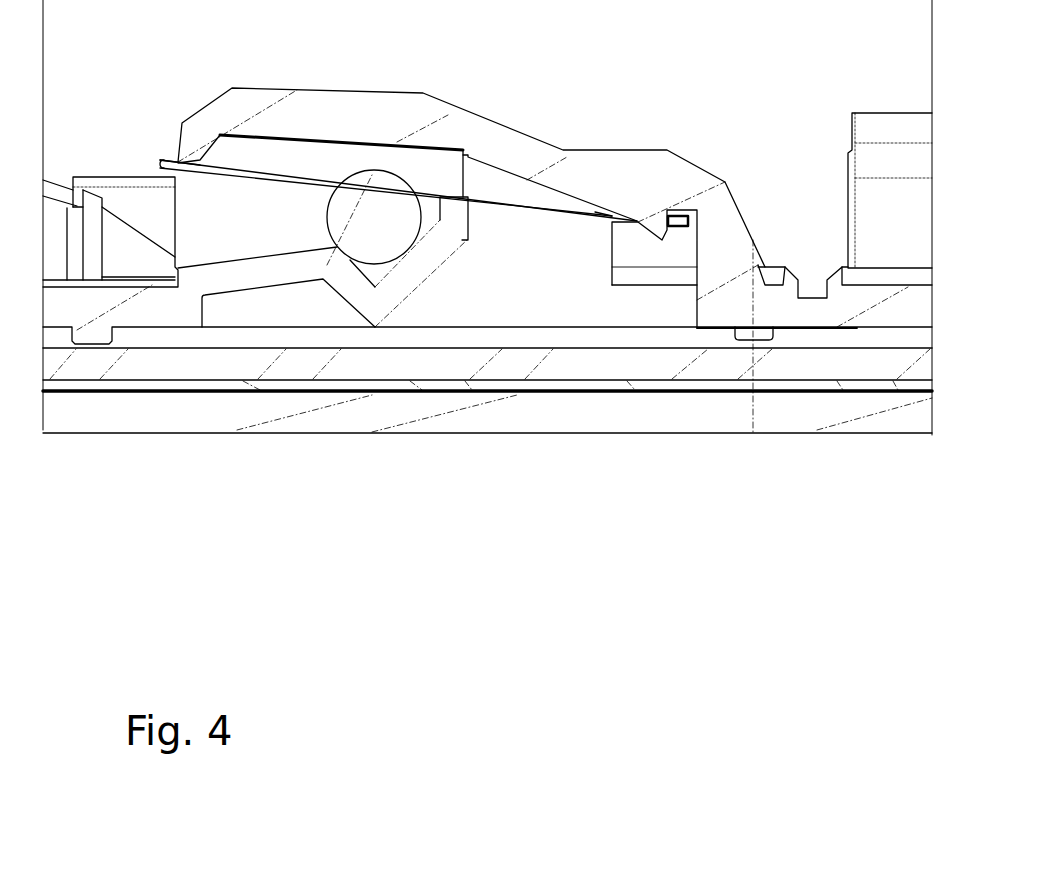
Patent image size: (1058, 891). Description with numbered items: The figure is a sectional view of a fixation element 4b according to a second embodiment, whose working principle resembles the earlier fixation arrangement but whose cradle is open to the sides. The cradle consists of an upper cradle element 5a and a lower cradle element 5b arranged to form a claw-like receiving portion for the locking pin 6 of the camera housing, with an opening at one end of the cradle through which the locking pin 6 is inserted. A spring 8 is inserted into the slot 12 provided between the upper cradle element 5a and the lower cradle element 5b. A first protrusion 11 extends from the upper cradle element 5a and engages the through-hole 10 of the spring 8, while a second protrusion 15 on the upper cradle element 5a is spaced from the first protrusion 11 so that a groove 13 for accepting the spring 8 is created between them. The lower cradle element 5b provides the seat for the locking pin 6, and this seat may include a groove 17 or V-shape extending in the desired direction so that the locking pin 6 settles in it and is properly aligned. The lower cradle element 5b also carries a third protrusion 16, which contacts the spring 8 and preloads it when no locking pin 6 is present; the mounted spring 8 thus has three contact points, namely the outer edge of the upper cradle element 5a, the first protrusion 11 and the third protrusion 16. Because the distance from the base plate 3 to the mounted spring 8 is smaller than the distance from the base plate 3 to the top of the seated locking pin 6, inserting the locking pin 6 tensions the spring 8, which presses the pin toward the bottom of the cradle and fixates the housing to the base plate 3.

The base plate 3 is at (687, 333).
The fixation element 4b is at (634, 120).
The upper cradle element 5a is at (407, 110).
The lower cradle element 5b is at (288, 305).
The locking pin 6 is at (384, 242).
The spring 8 is at (162, 106).
The through-hole 10 is at (577, 240).
The first protrusion 11 is at (654, 240).
The slot 12 is at (398, 140).
The groove 13 is at (724, 159).
The second protrusion 15 is at (785, 305).
The third protrusion 16 is at (480, 241).
The groove 17 is at (415, 273).